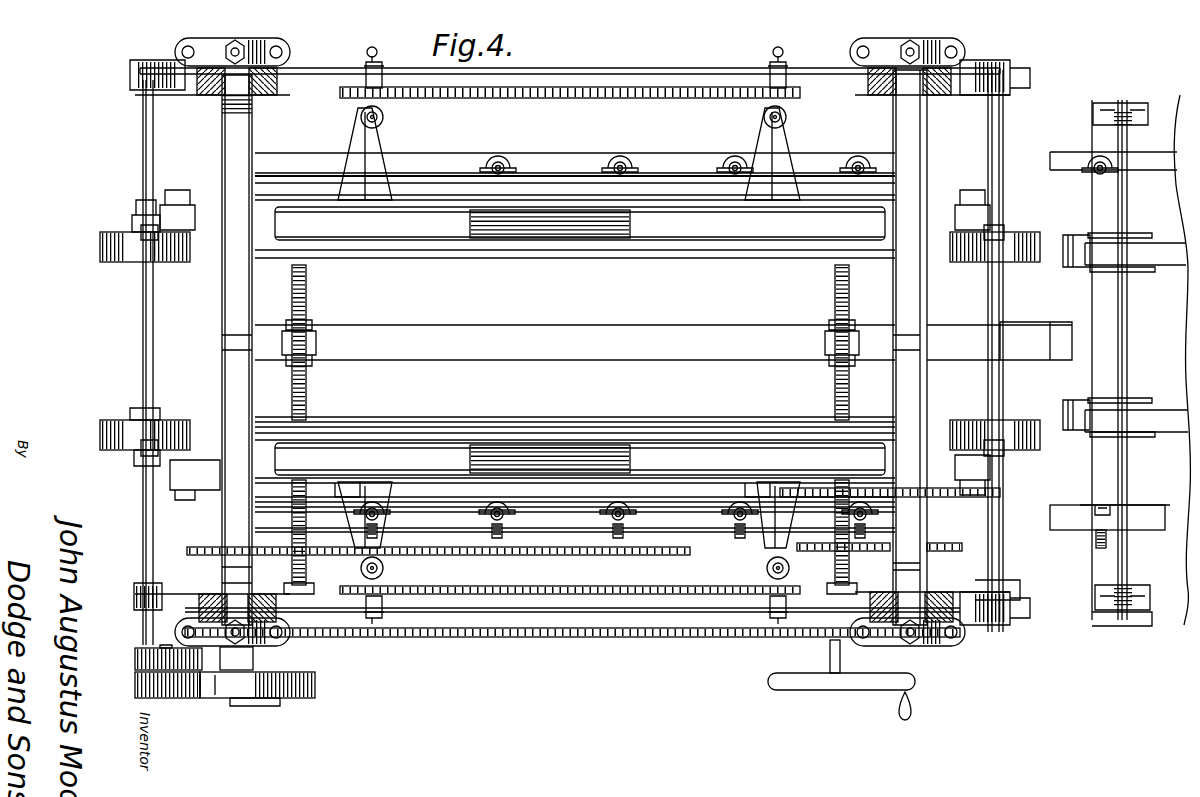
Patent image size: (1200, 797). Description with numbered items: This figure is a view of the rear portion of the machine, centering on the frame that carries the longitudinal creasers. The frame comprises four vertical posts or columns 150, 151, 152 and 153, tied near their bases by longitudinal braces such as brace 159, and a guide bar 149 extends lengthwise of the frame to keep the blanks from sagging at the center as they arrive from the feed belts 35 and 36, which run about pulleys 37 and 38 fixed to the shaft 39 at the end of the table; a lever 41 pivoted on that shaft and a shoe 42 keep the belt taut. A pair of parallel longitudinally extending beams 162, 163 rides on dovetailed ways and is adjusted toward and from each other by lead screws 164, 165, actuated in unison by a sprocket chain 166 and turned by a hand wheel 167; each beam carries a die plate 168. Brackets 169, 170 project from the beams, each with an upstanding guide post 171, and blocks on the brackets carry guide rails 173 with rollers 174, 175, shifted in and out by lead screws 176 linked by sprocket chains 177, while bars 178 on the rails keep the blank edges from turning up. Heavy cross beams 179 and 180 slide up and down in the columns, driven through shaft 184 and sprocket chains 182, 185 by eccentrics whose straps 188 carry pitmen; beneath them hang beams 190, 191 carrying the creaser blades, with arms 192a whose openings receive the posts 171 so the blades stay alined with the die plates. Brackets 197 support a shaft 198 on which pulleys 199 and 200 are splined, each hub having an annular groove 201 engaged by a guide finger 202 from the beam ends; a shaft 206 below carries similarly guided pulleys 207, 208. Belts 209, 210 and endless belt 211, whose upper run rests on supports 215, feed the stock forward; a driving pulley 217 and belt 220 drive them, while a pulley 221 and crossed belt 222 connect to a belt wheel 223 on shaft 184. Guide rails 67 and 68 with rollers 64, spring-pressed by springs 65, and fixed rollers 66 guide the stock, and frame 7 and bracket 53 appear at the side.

The frame 7 is at (1141, 360).
The belt 35 is at (1165, 432).
The belt 36 is at (1160, 267).
The pulley 37 is at (1134, 432).
The pulley 38 is at (1128, 274).
The shaft 39 is at (1128, 140).
The lever 41 is at (1138, 240).
The shoe 42 is at (1078, 268).
The base bracket 53 is at (1122, 618).
The roller 64 is at (1102, 505).
The spring 65 is at (1096, 540).
The roller 66 is at (1090, 150).
The guide bar or rail 67 is at (1150, 530).
The guide bar or rail 68 is at (1144, 166).
The guide bar 149 is at (663, 341).
The vertical post or column 150 is at (938, 592).
The vertical post or column 151 is at (870, 90).
The vertical post or column 152 is at (210, 594).
The vertical post or column 153 is at (265, 93).
The longitudinal brace 159 is at (722, 68).
The longitudinally extending beam 162 is at (520, 445).
The longitudinally extending beam 163 is at (552, 252).
The lead screw 164 is at (835, 296).
The lead screw 165 is at (308, 300).
The sprocket chain 166 is at (590, 638).
The hand wheel 167 is at (796, 690).
The die plate 168 is at (520, 236).
The bracket 169 is at (368, 475).
The bracket 170 is at (750, 482).
The guide post 171 is at (384, 116).
The guide rail 173 is at (592, 160).
The roller 174 is at (630, 520).
The roller 175 is at (632, 164).
The lead screw 176 is at (378, 74).
The sprocket chain 177 is at (650, 86).
The longitudinally disposed bar 178 is at (524, 172).
The cross beam 179 is at (912, 298).
The cross beam 180 is at (235, 292).
The sprocket chain 182 is at (1060, 490).
The shaft 184 is at (255, 658).
The sprocket chain 185 is at (645, 556).
The strap 188 is at (268, 50).
The longitudinally disposed beam 190 is at (580, 459).
The longitudinally disposed beam 191 is at (580, 223).
The arm 192a is at (380, 140).
The bracket 197 is at (980, 78).
The shaft 198 is at (988, 333).
The pulley 199 is at (1018, 428).
The pulley 200 is at (1012, 263).
The annular groove 201 is at (150, 218).
The guide finger 202 is at (180, 210).
The shaft 206 is at (143, 297).
The pulley 207 is at (124, 456).
The pulley 208 is at (120, 240).
The belt 209 is at (422, 416).
The belt 210 is at (100, 248).
The endless belt 211 is at (104, 426).
The longitudinally extending support 215 is at (763, 258).
The driving pulley 217 is at (240, 702).
The belt 220 is at (140, 648).
The pulley 221 is at (176, 699).
The crossed belt 222 is at (300, 704).
The band or belt wheel 223 is at (318, 686).